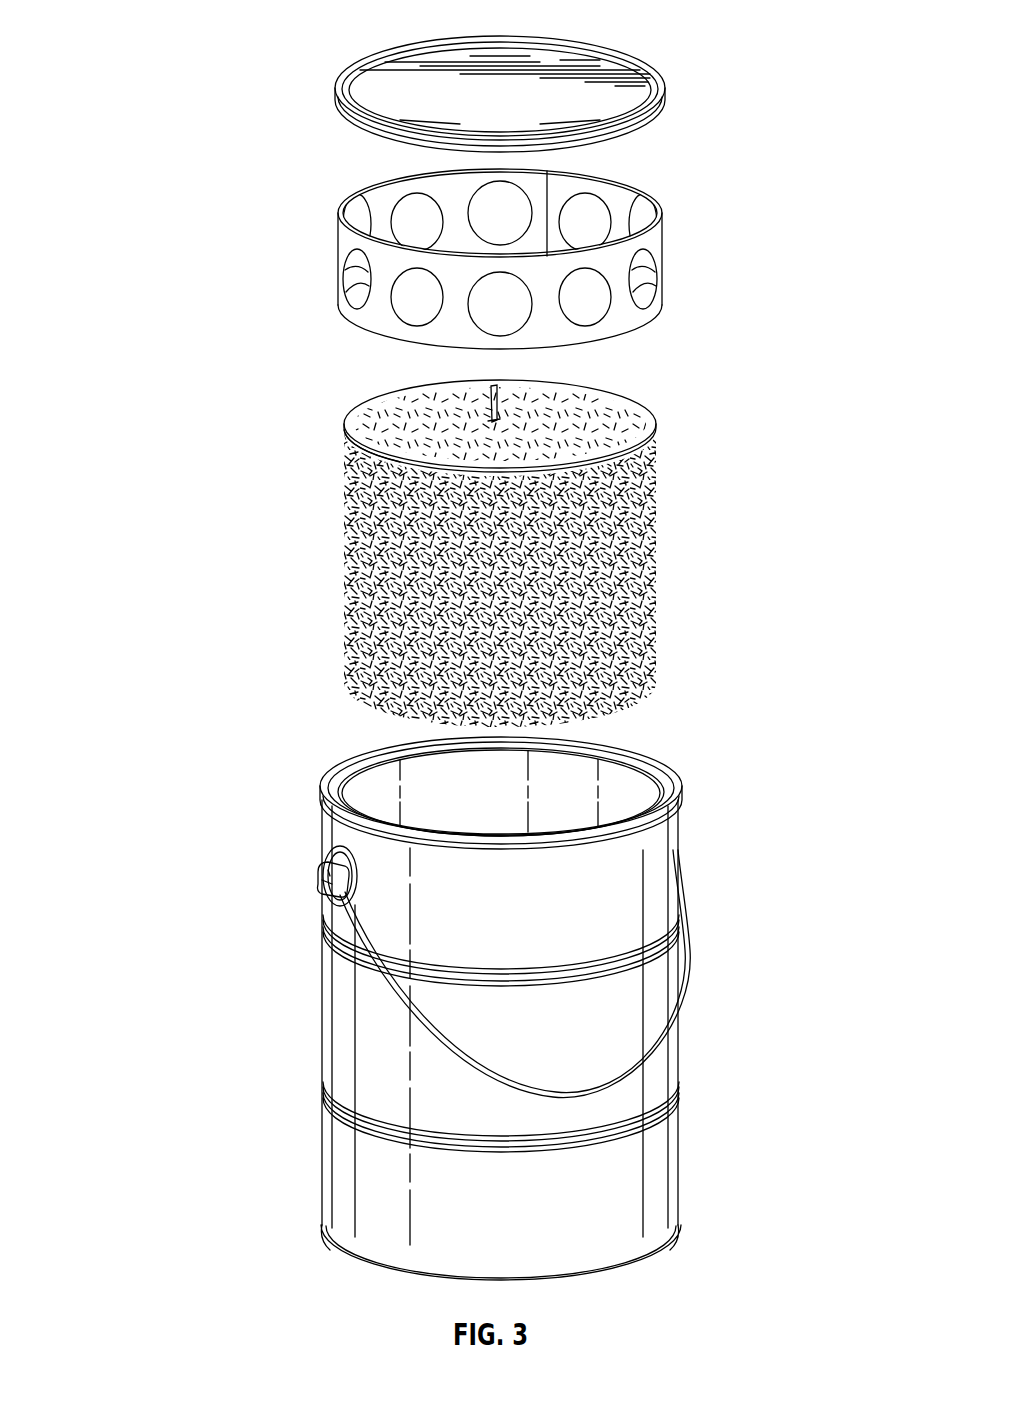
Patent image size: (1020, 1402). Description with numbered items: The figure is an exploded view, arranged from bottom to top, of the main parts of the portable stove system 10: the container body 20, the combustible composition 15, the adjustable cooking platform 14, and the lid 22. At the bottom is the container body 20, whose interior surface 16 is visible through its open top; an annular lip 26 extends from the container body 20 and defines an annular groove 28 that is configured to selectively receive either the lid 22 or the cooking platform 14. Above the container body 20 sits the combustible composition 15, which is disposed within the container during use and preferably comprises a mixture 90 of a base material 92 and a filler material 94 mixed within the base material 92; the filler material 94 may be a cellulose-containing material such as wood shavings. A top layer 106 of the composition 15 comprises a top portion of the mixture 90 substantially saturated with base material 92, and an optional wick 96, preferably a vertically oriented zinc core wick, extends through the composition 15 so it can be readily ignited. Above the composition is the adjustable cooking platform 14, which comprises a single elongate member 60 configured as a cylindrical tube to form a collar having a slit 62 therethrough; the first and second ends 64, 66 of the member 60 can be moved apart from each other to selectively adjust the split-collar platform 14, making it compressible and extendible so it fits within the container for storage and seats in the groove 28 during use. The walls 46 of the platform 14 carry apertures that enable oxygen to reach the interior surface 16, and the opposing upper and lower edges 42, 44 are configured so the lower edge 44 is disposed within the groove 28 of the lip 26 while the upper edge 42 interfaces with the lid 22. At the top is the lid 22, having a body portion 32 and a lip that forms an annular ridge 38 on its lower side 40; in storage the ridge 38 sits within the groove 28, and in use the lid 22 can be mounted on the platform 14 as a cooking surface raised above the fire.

The portable stove system 10 is at (236, 155).
The adjustable cooking platform 14 is at (680, 259).
The combustible composition 15 is at (311, 548).
The interior surface 16 is at (488, 808).
The container body 20 is at (527, 925).
The lid 22 is at (449, 110).
The annular lip 26 is at (340, 779).
The annular groove 28 is at (323, 790).
The body portion 32 is at (574, 110).
The annular ridge 38 is at (356, 62).
The lower side 40 is at (569, 56).
The upper edge 42 is at (668, 213).
The lower edge 44 is at (663, 305).
The walls 46 is at (552, 290).
The elongate member 60 is at (338, 255).
The slit 62 is at (552, 185).
The first end 64 is at (547, 225).
The second end 66 is at (547, 242).
The mixture 90 is at (684, 513).
The base material 92 is at (640, 480).
The filler material 94 is at (630, 582).
The wick 96 is at (500, 402).
The top layer 106 is at (350, 458).